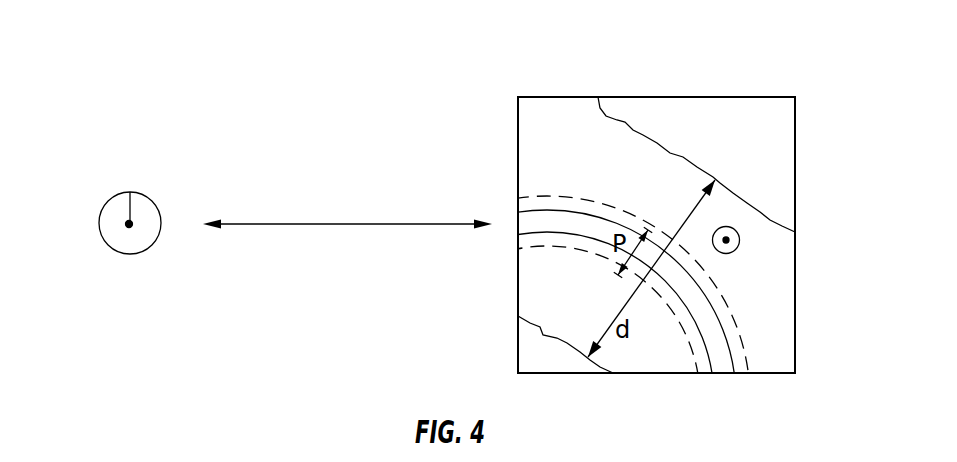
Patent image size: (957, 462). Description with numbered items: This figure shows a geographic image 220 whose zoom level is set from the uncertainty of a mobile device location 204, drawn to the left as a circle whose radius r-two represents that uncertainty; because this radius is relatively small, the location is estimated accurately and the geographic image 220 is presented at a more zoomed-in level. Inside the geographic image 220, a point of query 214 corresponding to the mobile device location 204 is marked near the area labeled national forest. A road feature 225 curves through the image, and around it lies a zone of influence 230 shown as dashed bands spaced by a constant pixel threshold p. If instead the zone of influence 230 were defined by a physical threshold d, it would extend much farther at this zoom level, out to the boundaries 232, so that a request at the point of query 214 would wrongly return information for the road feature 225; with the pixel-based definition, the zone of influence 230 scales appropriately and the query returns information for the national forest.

The mobile device location 204 is at (126, 224).
The point of query 214 is at (726, 240).
The geographic image 220 is at (675, 105).
The road feature 225 is at (735, 373).
The zone of influence 230 is at (582, 207).
The boundaries 232 is at (623, 120).